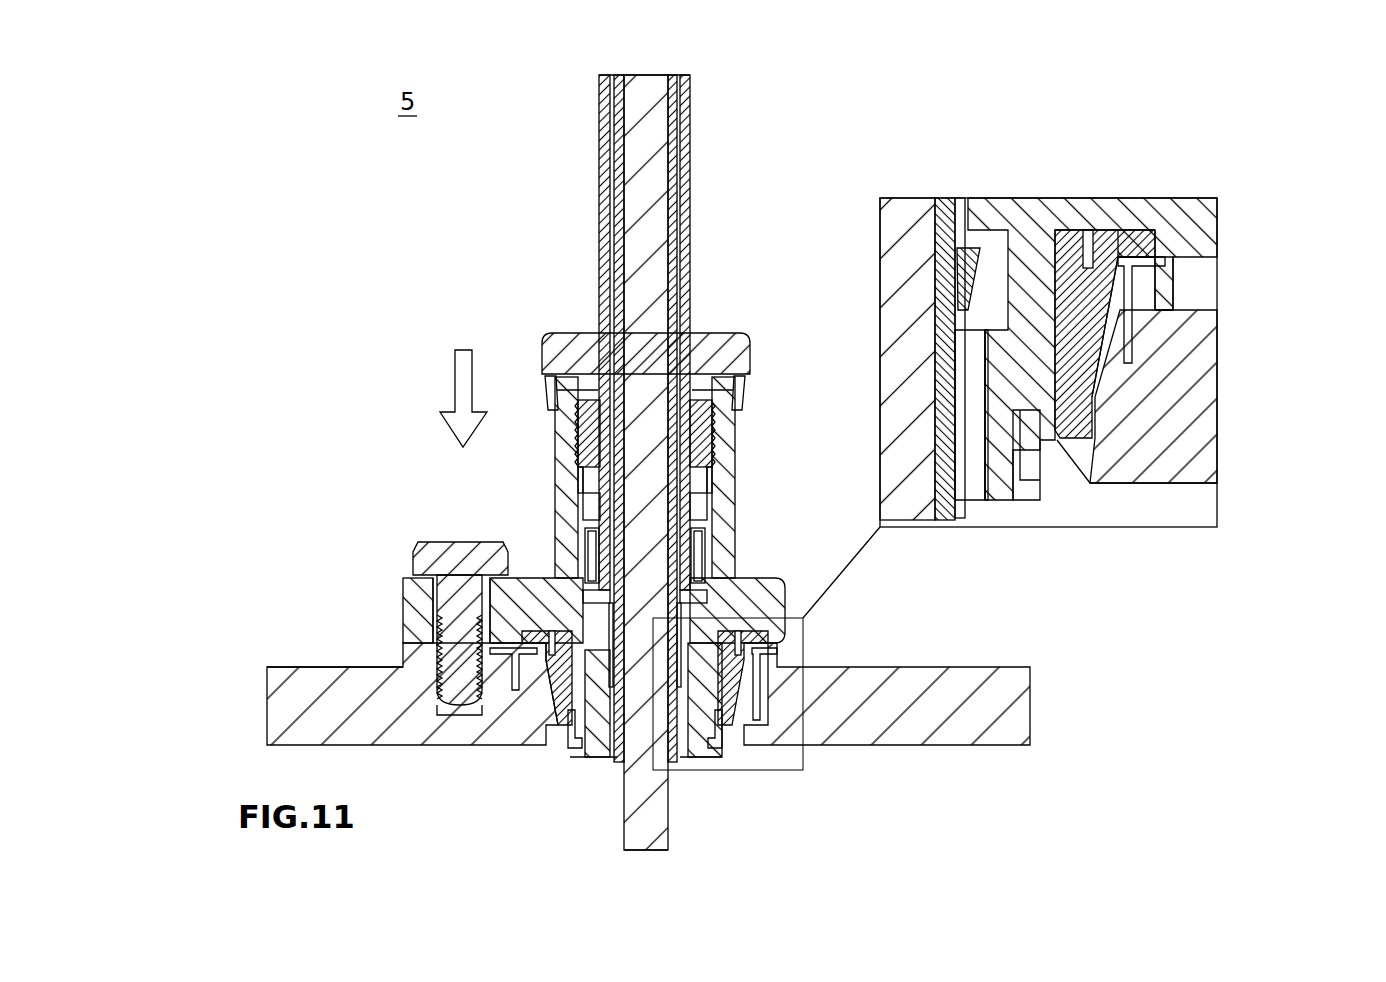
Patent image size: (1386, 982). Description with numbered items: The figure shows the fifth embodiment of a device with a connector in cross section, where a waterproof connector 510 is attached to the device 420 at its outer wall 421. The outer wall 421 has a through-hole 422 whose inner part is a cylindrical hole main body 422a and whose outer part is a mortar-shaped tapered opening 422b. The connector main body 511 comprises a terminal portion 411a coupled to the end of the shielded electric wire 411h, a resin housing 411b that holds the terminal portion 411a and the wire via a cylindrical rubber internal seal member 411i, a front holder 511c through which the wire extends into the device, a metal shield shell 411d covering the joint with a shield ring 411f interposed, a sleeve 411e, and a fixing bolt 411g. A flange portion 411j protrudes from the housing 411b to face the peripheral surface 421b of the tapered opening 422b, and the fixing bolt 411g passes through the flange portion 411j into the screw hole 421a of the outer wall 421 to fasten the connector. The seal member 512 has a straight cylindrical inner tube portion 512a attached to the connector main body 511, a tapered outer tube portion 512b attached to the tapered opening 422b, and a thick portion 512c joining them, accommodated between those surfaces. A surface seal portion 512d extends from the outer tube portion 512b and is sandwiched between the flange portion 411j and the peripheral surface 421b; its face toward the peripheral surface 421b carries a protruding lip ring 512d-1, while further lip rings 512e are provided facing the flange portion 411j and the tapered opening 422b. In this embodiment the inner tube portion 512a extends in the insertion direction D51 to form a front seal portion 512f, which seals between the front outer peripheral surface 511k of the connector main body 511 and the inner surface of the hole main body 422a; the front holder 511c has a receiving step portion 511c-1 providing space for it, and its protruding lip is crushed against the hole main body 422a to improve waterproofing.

The waterproof connector 510 is at (320, 232).
The connector main body 511 is at (528, 352).
The seal member 512 is at (545, 625).
The inner tube portion 512a is at (1055, 230).
The outer tube portion 512b is at (1112, 240).
The thick portion 512c is at (1086, 235).
The surface seal portion 512d is at (1170, 215).
The protruding lip ring 512d-1 is at (1155, 245).
The lip ring 512e is at (1150, 250).
The front seal portion 512f is at (1060, 500).
The front holder 511c is at (700, 750).
The receiving step portion 511c-1 is at (1100, 520).
The front outer peripheral surface 511k is at (1000, 505).
The insertion direction D51 is at (455, 380).
The terminal portion 411a is at (648, 133).
The housing 411b is at (735, 455).
The shield shell 411d is at (708, 512).
The sleeve 411e is at (707, 565).
The shield ring 411f is at (703, 480).
The fixing bolt 411g is at (457, 540).
The shielded electric wire 411h is at (650, 830).
The internal seal member 411i is at (577, 385).
The flange portion 411j is at (412, 600).
The device 420 is at (262, 700).
The outer wall 421 is at (305, 685).
The screw hole 421a is at (452, 715).
The peripheral surface 421b is at (515, 692).
The through-hole 422 is at (922, 770).
The hole main body 422a is at (760, 740).
The tapered opening 422b is at (750, 685).